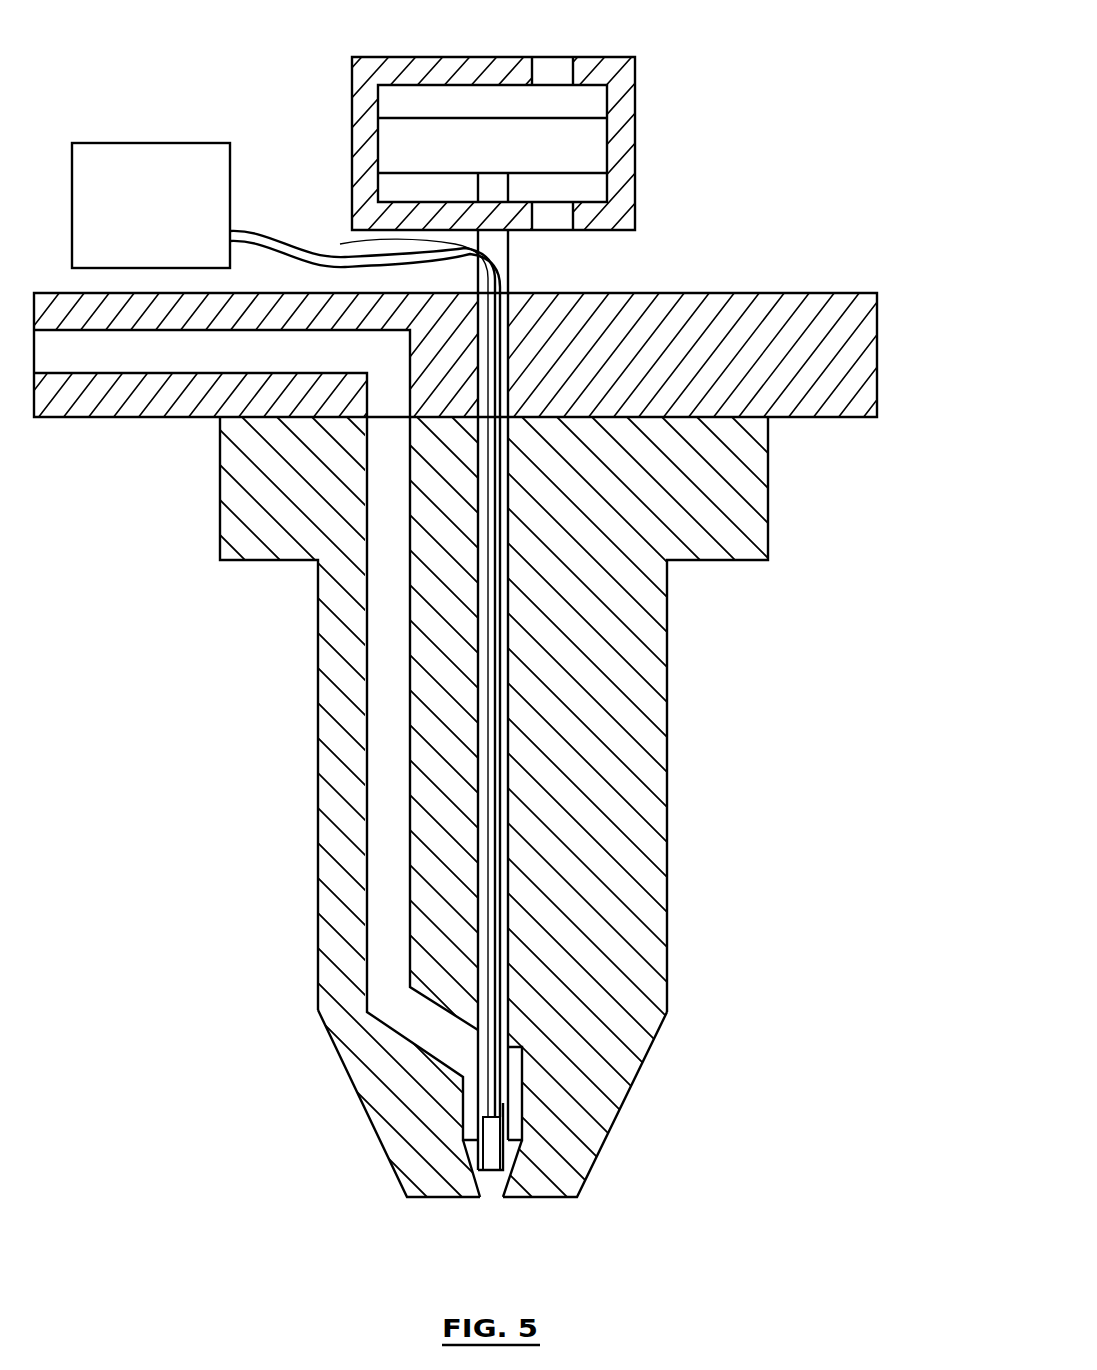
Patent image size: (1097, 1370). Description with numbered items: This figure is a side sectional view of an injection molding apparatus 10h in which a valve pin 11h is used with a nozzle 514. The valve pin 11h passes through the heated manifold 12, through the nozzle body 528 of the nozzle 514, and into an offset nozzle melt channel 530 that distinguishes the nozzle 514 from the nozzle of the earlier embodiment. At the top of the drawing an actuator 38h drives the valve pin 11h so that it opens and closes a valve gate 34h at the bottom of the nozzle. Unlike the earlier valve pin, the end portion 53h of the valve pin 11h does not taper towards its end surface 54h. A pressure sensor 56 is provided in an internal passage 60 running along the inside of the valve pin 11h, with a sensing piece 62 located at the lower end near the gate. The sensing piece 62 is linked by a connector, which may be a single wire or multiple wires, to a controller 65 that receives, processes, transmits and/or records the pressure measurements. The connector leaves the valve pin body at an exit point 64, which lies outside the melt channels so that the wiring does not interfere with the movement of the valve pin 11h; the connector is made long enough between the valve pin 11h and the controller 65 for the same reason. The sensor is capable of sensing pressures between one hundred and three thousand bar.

The controller 65 is at (126, 143).
The actuator 38h is at (660, 96).
The injection molding apparatus 10h is at (716, 178).
The exit point 64 is at (365, 248).
The manifold 12 is at (715, 313).
The valve pin 11h is at (510, 605).
The nozzle 514 is at (640, 690).
The pressure sensor 56 is at (500, 735).
The nozzle body 528 is at (640, 800).
The offset nozzle melt channel 530 is at (373, 897).
The internal passage 60 is at (500, 990).
The end portion 53h is at (500, 1120).
The sensing piece 62 is at (498, 1147).
The end surface 54h is at (497, 1177).
The valve gate 34h is at (492, 1198).